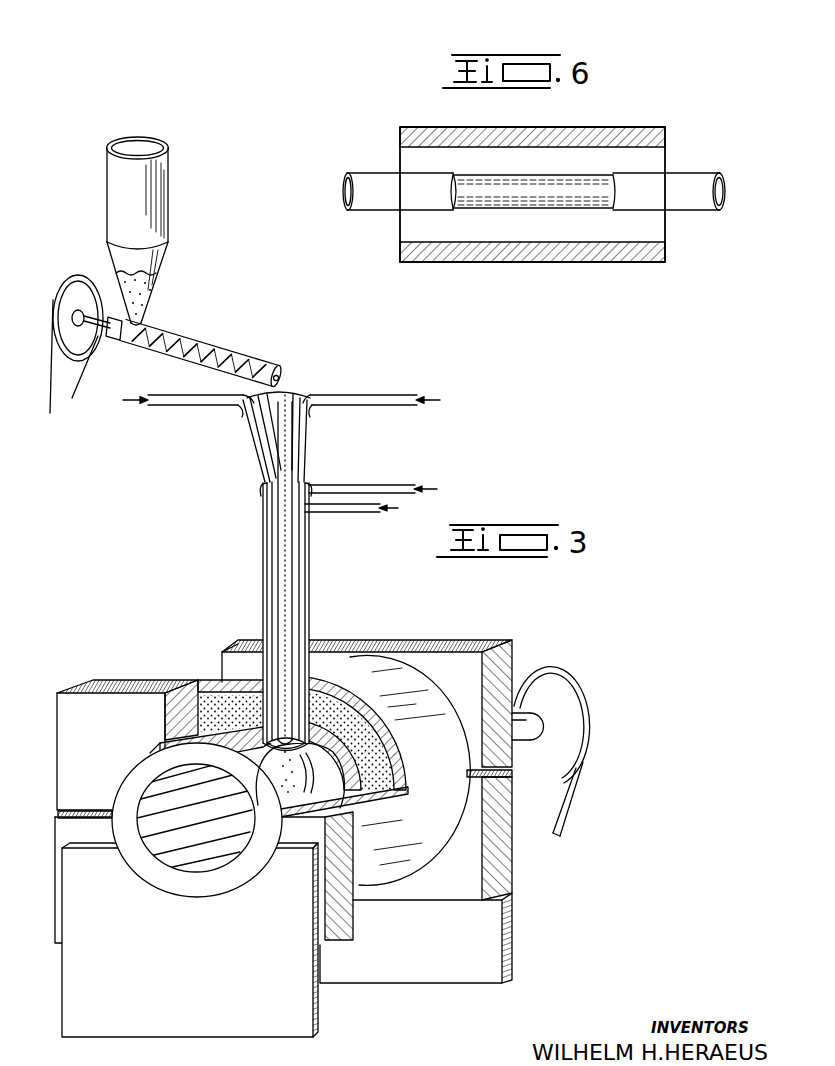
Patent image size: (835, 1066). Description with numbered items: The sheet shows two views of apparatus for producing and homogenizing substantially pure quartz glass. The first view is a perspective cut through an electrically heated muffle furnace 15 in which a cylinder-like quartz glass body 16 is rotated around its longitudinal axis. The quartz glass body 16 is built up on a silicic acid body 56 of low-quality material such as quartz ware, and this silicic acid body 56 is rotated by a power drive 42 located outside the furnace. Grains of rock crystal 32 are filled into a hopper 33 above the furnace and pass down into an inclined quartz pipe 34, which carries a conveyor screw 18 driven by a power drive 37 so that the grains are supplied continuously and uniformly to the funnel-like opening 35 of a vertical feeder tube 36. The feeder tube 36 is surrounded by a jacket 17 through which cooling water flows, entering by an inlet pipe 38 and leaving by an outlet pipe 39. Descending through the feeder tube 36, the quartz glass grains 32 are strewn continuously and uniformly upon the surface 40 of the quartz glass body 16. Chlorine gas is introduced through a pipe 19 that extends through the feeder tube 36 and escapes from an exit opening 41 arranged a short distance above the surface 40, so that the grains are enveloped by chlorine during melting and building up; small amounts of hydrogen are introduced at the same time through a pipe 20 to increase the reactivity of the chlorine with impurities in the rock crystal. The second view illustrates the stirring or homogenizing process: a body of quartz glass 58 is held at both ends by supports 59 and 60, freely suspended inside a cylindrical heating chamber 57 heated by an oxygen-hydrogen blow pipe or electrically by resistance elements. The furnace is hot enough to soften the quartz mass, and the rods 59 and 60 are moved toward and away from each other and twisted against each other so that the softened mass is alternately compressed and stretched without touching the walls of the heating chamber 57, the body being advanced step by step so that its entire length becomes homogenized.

In FIG. 3, the muffle furnace 15 is at (82, 962).
In FIG. 3, the quartz glass body 16 is at (262, 798).
In FIG. 3, the jacket 17 is at (305, 599).
In FIG. 3, the conveyor screw 18 is at (172, 340).
In FIG. 3, the chlorine gas supply pipe 19 is at (200, 407).
In FIG. 3, the hydrogen pipe 20 is at (382, 407).
In FIG. 3, the grains of rock crystal 32 is at (152, 305).
In FIG. 3, the hopper 33 is at (164, 208).
In FIG. 3, the inclined quartz pipe 34 is at (223, 351).
In FIG. 3, the funnel-like opening 35 is at (294, 396).
In FIG. 3, the vertical feeder tube 36 is at (268, 598).
In FIG. 3, the power drive 37 is at (62, 340).
In FIG. 3, the inlet pipe 38 is at (347, 514).
In FIG. 3, the outlet pipe 39 is at (393, 487).
In FIG. 3, the surface of quartz glass body 40 is at (283, 781).
In FIG. 3, the exit opening 41 is at (275, 728).
In FIG. 3, the power drive 42 is at (567, 682).
In FIG. 3, the silicic acid body 56 is at (530, 735).
In FIG. 6, the heating chamber 57 is at (628, 263).
In FIG. 6, the body of quartz glass 58 is at (563, 211).
In FIG. 6, the support rod 59 is at (376, 171).
In FIG. 6, the support rod 60 is at (689, 180).